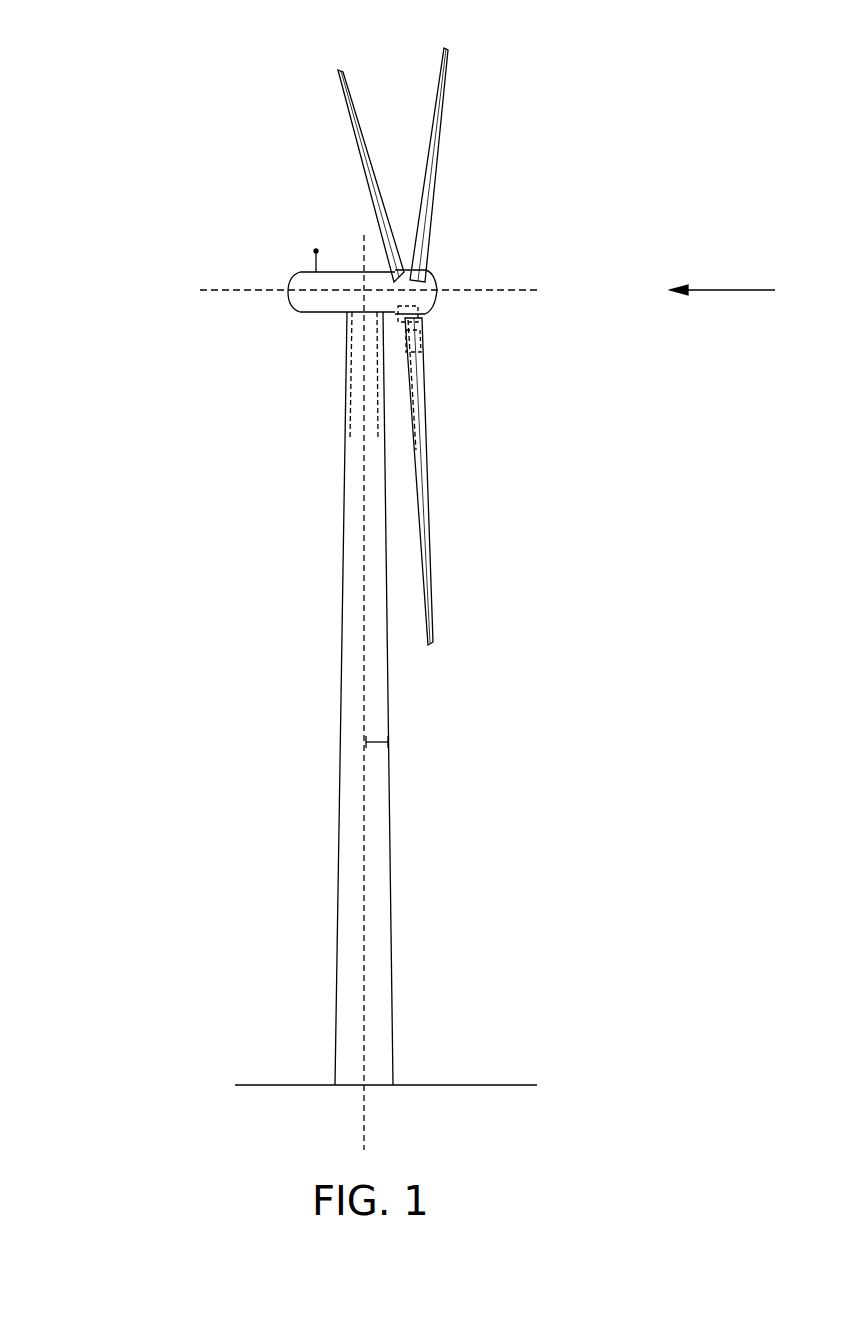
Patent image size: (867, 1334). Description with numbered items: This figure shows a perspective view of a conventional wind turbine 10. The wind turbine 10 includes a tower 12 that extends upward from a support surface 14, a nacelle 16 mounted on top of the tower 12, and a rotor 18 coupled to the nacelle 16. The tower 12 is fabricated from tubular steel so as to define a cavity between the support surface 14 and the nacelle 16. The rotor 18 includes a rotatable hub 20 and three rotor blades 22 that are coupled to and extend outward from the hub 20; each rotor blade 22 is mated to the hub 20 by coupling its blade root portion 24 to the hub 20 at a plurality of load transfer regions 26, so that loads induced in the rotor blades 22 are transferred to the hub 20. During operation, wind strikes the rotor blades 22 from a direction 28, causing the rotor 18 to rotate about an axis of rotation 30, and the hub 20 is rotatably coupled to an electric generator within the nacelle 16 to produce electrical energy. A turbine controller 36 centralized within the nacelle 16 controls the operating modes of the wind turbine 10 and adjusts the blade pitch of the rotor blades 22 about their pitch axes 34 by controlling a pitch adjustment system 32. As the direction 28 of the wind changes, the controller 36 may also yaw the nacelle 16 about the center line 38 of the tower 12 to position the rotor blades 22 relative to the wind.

The wind turbine 10 is at (118, 78).
The tower 12 is at (340, 858).
The support surface 14 is at (298, 1084).
The nacelle 16 is at (322, 314).
The rotor 18 is at (446, 193).
The rotatable hub 20 is at (430, 288).
The rotor blade 22 is at (362, 142).
The blade root portion 24 is at (427, 392).
The load transfer regions 26 is at (416, 316).
The direction of the wind 28 is at (740, 290).
The axis of rotation 30 is at (505, 292).
The pitch adjustment system 32 is at (430, 344).
The pitch axes 34 is at (338, 72).
The turbine controller 36 is at (352, 340).
The tower center line 38 is at (395, 742).